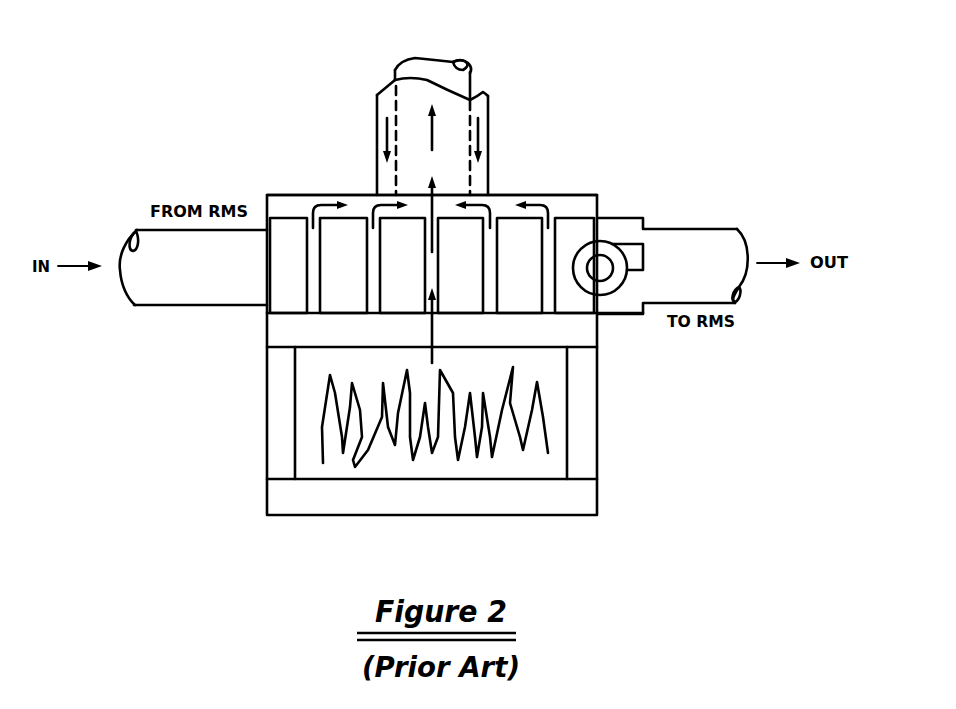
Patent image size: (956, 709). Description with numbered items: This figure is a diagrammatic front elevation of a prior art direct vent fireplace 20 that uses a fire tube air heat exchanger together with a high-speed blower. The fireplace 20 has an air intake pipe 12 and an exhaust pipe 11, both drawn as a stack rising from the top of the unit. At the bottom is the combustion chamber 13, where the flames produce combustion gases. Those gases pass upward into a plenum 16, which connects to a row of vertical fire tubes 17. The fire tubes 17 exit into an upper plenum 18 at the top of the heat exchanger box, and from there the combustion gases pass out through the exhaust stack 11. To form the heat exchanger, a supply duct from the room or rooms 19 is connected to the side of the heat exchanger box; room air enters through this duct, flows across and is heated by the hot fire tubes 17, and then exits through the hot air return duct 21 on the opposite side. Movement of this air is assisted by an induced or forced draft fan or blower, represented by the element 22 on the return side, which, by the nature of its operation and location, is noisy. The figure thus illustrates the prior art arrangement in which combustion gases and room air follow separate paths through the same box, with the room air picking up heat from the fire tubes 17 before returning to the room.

The exhaust pipe 11 is at (470, 77).
The air intake pipe 12 is at (488, 137).
The combustion chamber 13 is at (500, 371).
The plenum 16 is at (303, 333).
The fire tubes 17 is at (368, 287).
The upper plenum 18 is at (538, 202).
The supply duct from the room(s) 19 is at (168, 307).
The direct vent fireplace 20 is at (658, 139).
The hot air return duct 21 is at (712, 235).
The valve 22 is at (607, 247).